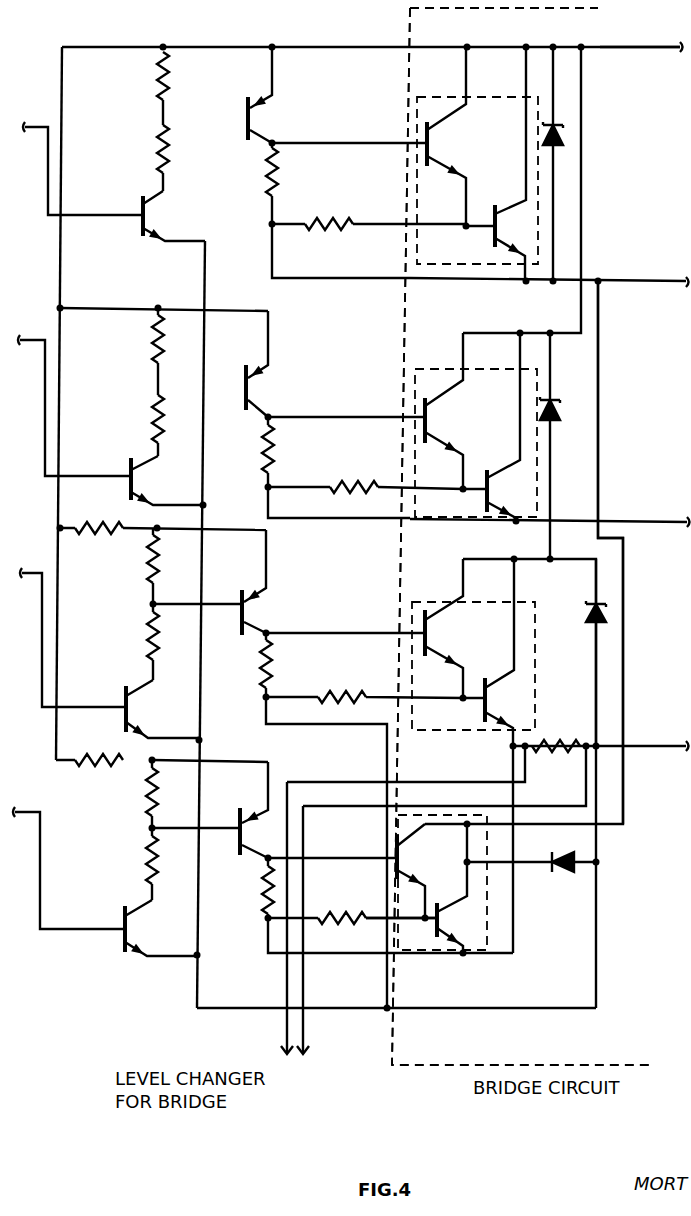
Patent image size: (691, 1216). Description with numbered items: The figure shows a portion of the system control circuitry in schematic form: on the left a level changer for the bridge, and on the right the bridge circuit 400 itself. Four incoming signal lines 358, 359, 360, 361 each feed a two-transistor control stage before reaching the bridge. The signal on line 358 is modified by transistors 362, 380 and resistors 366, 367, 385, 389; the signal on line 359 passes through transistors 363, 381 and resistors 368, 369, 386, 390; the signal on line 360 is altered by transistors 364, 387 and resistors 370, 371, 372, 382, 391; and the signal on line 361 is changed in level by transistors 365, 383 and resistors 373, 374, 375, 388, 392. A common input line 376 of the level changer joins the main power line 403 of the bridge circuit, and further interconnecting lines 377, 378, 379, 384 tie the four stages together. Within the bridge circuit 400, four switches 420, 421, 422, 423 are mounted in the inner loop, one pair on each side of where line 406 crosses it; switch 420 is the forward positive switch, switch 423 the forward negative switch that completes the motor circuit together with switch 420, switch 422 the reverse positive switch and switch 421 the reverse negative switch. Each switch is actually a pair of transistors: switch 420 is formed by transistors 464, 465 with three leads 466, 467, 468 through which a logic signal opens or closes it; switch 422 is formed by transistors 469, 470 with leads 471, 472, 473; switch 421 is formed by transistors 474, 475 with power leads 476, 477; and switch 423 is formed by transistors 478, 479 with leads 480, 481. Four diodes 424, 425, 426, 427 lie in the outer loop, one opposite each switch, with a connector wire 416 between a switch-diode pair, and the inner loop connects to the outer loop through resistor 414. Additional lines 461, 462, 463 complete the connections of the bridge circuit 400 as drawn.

The line 358 is at (49, 123).
The line 359 is at (48, 344).
The line 360 is at (48, 575).
The line 361 is at (32, 813).
The transistor 362 is at (154, 205).
The transistor 363 is at (134, 460).
The transistor 364 is at (127, 692).
The transistor 365 is at (120, 914).
The resistor 366 is at (158, 160).
The resistor 367 is at (157, 78).
The resistor 368 is at (151, 418).
The resistor 369 is at (152, 350).
The resistor 370 is at (148, 636).
The resistor 371 is at (150, 568).
The resistor 372 is at (113, 520).
The resistor 373 is at (146, 860).
The resistor 374 is at (146, 819).
The resistor 375 is at (102, 770).
The common input line 376 is at (212, 46).
The line 377 is at (186, 305).
The line 378 is at (255, 524).
The line 379 is at (266, 762).
The transistor 380 is at (243, 134).
The transistor 381 is at (244, 404).
The resistor 382 is at (240, 618).
The transistor 383 is at (244, 846).
The line 384 is at (186, 995).
The resistor 385 is at (281, 180).
The resistor 386 is at (275, 449).
The transistor 387 is at (270, 656).
The resistor 388 is at (266, 895).
The resistor 389 is at (323, 222).
The resistor 390 is at (346, 481).
The resistor 391 is at (331, 697).
The resistor 392 is at (366, 918).
The bridge circuit 400 is at (514, 1022).
The main power line 403 is at (383, 46).
The line 406 is at (627, 280).
The resistor 414 is at (583, 744).
The connector wire 416 is at (610, 572).
The switch 420 is at (415, 367).
The switch 421 is at (535, 671).
The switch 422 is at (418, 97).
The switch 423 is at (492, 922).
The diode 424 is at (563, 405).
The diode 425 is at (606, 612).
The diode 426 is at (560, 130).
The diode 427 is at (578, 860).
The line 461 is at (606, 50).
The output line 462 is at (641, 754).
The line 463 is at (374, 956).
The transistor 464 is at (446, 398).
The transistor 465 is at (489, 470).
The lead 466 is at (348, 417).
The lead 467 is at (394, 520).
The lead 468 is at (322, 520).
The transistor 469 is at (447, 128).
The transistor 470 is at (498, 240).
The lead 471 is at (360, 142).
The lead 472 is at (395, 228).
The lead 473 is at (388, 281).
The transistor 474 is at (446, 608).
The transistor 475 is at (488, 680).
The power lead 476 is at (365, 632).
The power lead 477 is at (390, 722).
The transistor 478 is at (409, 842).
The transistor 479 is at (437, 908).
The lead 480 is at (320, 858).
The lead 481 is at (377, 921).